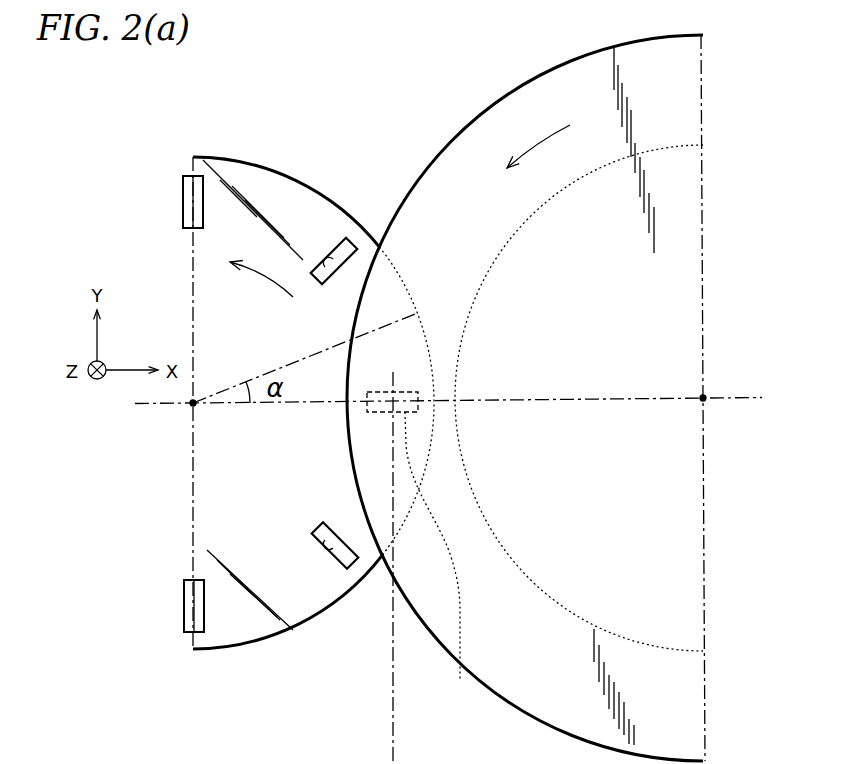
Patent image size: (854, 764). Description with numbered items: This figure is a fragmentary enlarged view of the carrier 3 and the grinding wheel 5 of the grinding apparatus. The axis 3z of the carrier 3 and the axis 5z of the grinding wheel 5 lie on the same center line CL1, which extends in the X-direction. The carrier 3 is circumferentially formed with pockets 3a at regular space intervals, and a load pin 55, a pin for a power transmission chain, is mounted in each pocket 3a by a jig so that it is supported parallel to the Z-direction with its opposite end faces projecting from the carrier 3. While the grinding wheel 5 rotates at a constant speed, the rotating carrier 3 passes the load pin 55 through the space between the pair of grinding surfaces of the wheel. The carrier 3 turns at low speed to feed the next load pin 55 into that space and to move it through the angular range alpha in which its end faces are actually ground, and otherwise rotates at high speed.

The carrier 3 is at (249, 184).
The pocket 3a is at (328, 259).
The axis of the carrier 3z is at (193, 405).
The grinding wheel 5 is at (517, 105).
The axis of the grinding wheel 5z is at (705, 400).
The load pin 55 is at (362, 233).
The center line CL1 is at (660, 400).